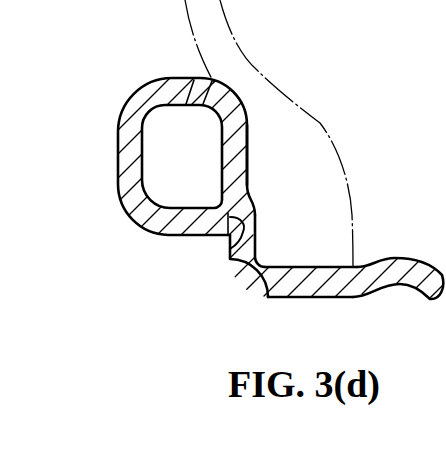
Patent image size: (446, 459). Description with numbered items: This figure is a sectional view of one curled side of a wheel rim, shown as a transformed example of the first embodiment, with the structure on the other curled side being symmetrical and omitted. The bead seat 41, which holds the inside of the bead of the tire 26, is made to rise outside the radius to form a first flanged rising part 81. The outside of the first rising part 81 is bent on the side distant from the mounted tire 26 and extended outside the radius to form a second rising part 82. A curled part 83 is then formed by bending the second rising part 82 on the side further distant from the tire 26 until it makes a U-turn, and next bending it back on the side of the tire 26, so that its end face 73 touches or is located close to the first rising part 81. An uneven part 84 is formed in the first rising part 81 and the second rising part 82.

The tire 26 is at (232, 30).
The bead seat 41 is at (321, 267).
The end face 73 is at (231, 241).
The first flanged rising part 81 is at (258, 238).
The second rising part 82 is at (247, 151).
The curled part 83 is at (128, 102).
The uneven part 84 is at (257, 192).